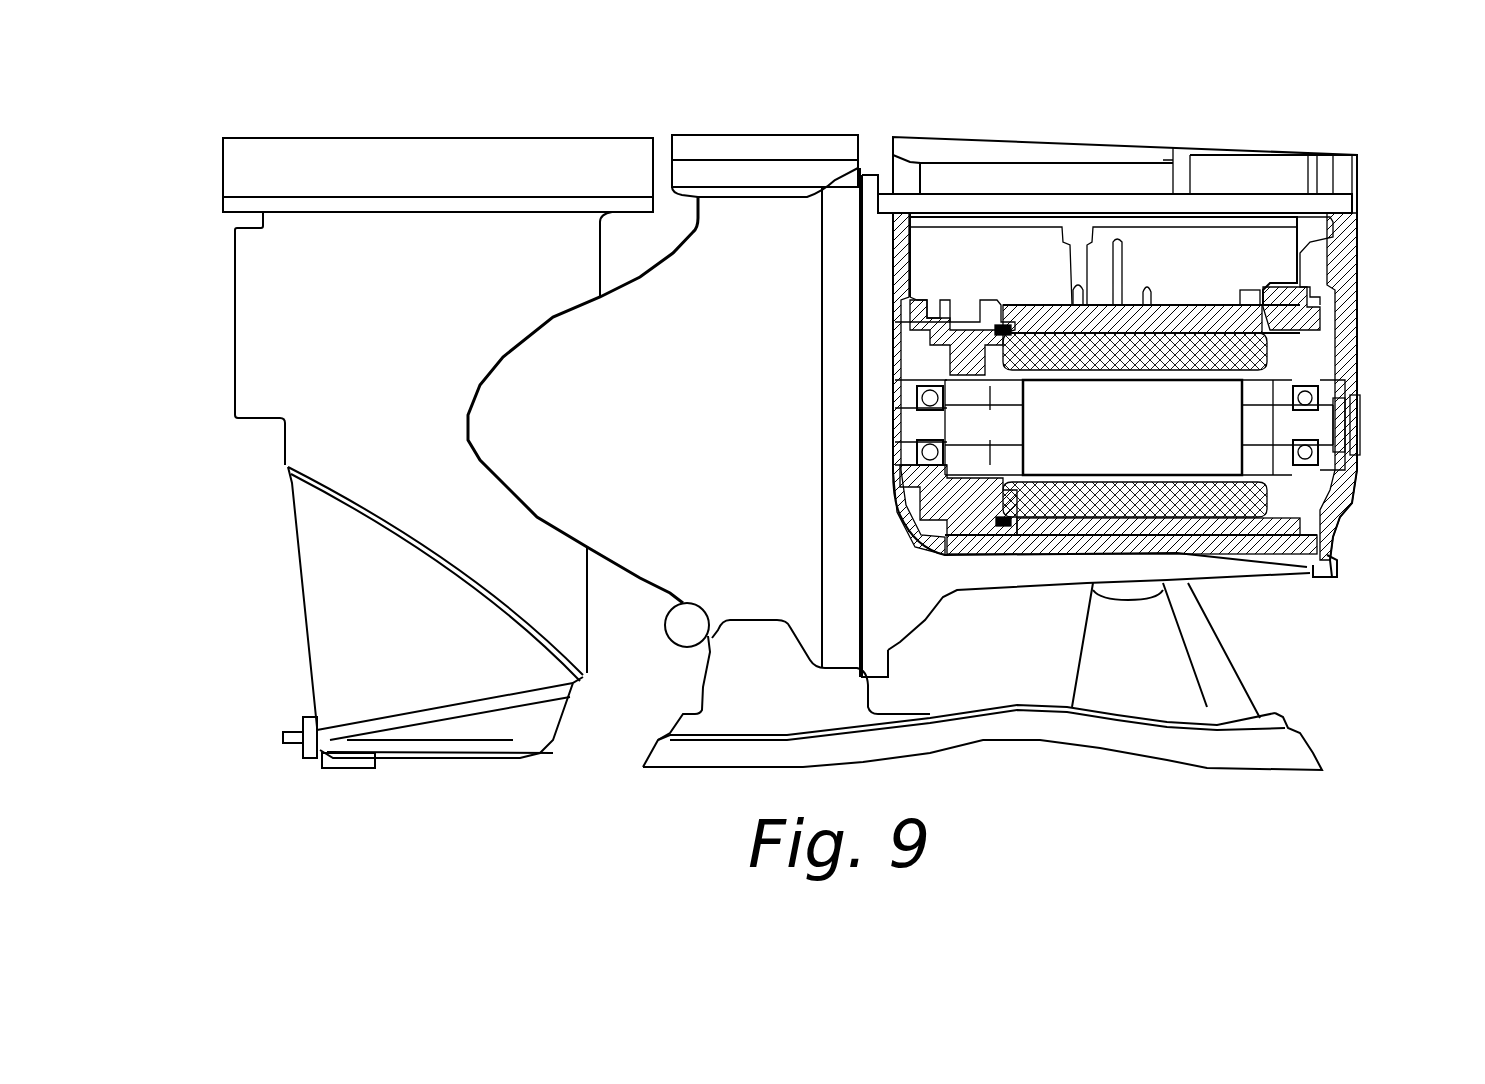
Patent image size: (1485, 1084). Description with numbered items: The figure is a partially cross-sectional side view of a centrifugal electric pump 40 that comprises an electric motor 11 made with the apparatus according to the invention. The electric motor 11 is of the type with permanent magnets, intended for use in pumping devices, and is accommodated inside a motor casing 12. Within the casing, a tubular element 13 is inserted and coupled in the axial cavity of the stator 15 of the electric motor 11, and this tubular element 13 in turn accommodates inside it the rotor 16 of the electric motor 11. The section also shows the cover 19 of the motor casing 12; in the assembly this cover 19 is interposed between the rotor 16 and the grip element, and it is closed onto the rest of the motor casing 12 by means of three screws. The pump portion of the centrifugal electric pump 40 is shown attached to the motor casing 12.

The electric motor 11 is at (1162, 284).
The motor casing 12 is at (987, 556).
The tubular element 13 is at (1067, 377).
The stator 15 is at (973, 320).
The rotor 16 is at (1250, 394).
The cover 19 is at (1360, 289).
The centrifugal electric pump 40 is at (273, 543).